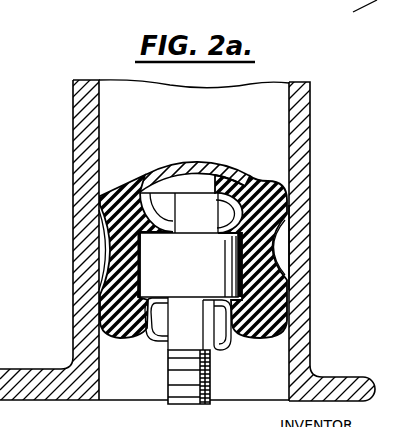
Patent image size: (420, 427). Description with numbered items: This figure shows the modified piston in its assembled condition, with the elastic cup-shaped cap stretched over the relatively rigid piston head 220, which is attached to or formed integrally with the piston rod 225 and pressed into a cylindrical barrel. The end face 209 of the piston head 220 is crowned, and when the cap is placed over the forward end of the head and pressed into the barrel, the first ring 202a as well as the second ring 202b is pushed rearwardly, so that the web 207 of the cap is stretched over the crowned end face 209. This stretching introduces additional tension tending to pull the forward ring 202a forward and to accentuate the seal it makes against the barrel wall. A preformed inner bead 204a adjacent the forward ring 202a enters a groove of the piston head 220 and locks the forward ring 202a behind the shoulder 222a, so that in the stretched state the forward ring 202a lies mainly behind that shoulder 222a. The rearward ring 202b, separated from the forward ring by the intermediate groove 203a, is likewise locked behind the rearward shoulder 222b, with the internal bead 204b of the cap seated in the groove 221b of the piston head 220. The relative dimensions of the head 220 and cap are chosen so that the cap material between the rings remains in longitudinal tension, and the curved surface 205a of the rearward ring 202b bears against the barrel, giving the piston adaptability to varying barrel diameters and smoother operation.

The web 207 is at (193, 166).
The end face 209 is at (181, 186).
The inner bead 204a is at (242, 183).
The shoulder 222a is at (235, 128).
The forward ring 202a is at (292, 202).
The groove 203a is at (300, 232).
The seal ring curved surface 205a is at (270, 254).
The piston head 220 is at (207, 271).
The rearward ring 202b is at (288, 316).
The rearward shoulder 222b is at (162, 338).
The internal bead 204b is at (223, 338).
The groove 221b is at (190, 352).
The piston rod 225 is at (191, 383).